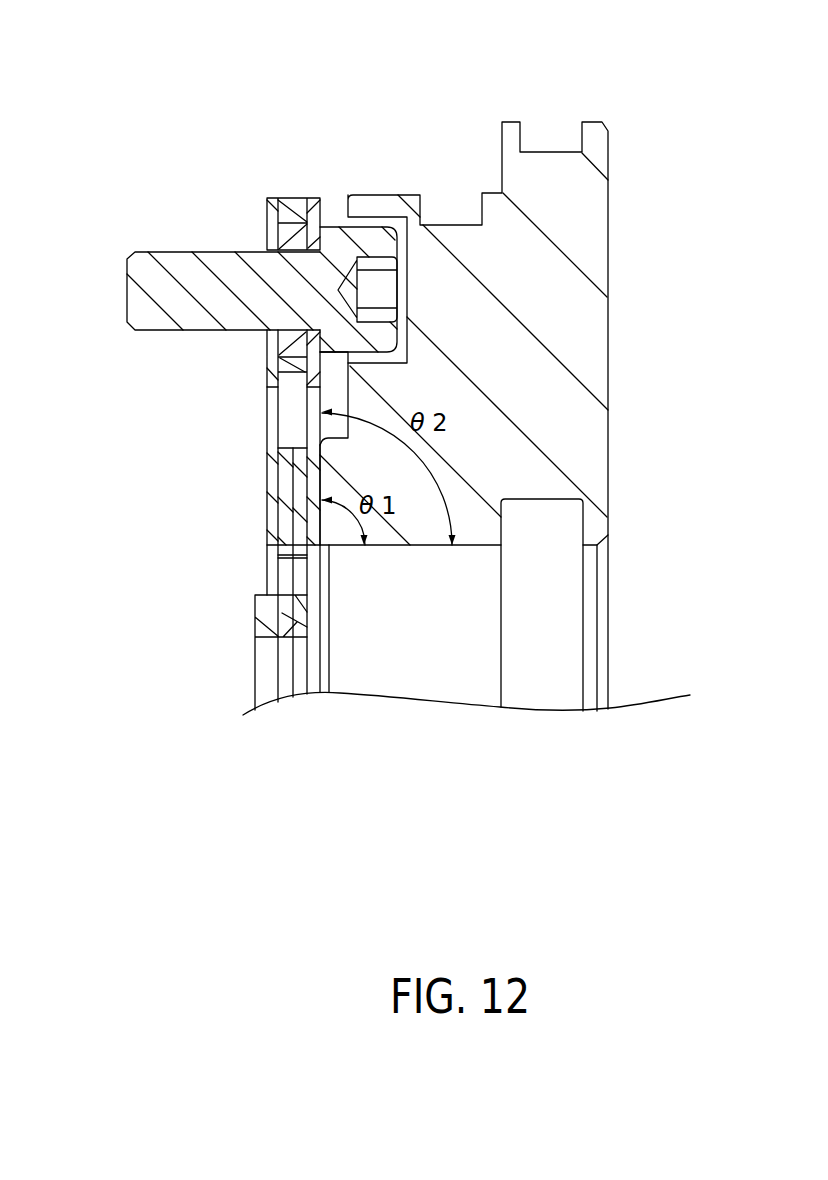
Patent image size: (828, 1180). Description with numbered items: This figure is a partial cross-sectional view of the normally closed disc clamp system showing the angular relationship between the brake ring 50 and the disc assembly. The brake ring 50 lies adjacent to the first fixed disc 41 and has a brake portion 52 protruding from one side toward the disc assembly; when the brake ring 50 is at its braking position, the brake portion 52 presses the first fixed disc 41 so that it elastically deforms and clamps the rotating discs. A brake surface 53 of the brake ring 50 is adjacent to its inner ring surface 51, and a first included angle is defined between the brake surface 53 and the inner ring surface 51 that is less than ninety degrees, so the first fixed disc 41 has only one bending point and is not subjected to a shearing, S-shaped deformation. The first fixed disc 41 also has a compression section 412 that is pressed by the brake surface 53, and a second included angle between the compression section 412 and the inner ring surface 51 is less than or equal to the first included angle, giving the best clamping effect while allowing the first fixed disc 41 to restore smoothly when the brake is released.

The first fixed disc 41 is at (313, 196).
The compression section 412 is at (318, 515).
The brake ring 50 is at (560, 313).
The inner ring surface 51 is at (436, 548).
The brake portion 52 is at (332, 486).
The brake surface 53 is at (322, 463).